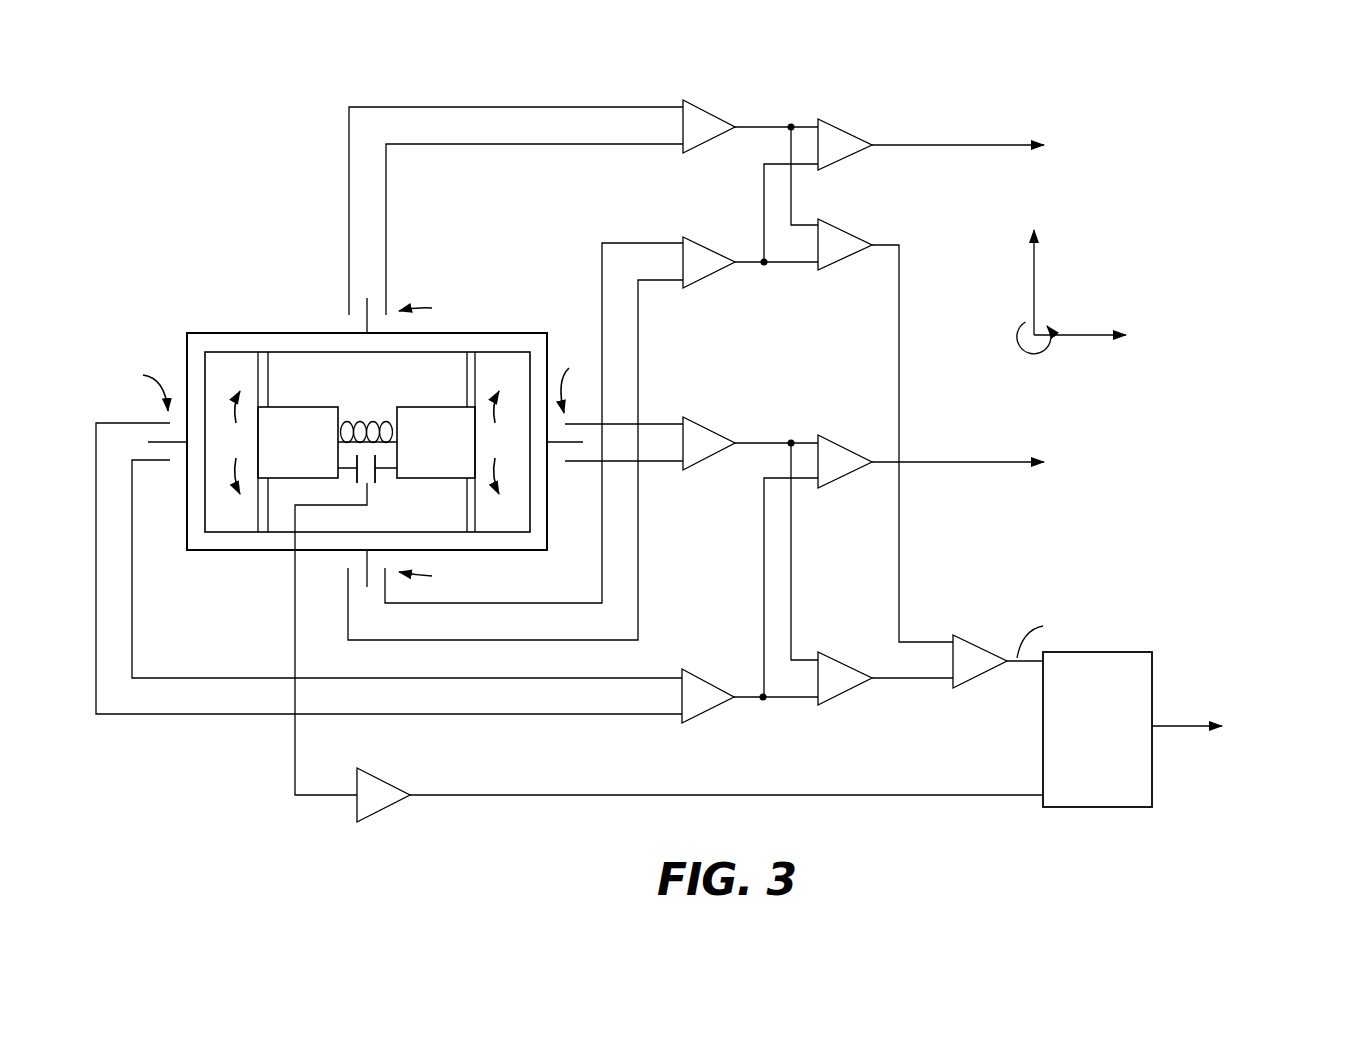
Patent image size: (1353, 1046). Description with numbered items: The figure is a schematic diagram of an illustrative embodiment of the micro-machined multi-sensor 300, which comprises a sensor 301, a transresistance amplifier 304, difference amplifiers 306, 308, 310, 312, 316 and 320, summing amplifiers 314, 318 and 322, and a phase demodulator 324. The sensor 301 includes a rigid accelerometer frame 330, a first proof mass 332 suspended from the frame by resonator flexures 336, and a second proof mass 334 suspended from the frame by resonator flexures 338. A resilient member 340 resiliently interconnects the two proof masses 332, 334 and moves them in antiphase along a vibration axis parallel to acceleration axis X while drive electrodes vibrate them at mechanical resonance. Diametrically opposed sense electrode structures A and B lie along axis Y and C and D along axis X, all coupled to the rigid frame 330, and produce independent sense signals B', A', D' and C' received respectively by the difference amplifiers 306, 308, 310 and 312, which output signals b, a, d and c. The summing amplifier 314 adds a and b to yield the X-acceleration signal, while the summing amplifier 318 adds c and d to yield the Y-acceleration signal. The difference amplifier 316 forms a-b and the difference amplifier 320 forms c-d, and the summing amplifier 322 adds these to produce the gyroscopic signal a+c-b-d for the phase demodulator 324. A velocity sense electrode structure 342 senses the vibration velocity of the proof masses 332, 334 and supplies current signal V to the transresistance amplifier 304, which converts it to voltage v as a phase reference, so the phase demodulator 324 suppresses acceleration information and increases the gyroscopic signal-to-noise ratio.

The multi-sensor 300 is at (230, 122).
The sensor 301 is at (505, 296).
The transresistance amplifier 304 is at (383, 778).
The difference amplifier 306 is at (714, 109).
The difference amplifier 308 is at (712, 240).
The difference amplifier 310 is at (705, 419).
The difference amplifier 312 is at (706, 670).
The summing amplifier 314 is at (848, 130).
The difference amplifier 316 is at (848, 229).
The summing amplifier 318 is at (845, 436).
The difference amplifier 320 is at (845, 653).
The summing amplifier 322 is at (980, 640).
The phase demodulator 324 is at (1097, 729).
The rigid accelerometer frame 330 is at (258, 332).
The first proof mass 332 is at (298, 442).
The second proof mass 334 is at (436, 442).
The resonator flexures 336 is at (240, 442).
The resonator flexures 338 is at (496, 442).
The resilient member 340 is at (369, 412).
The velocity sense electrode structure 342 is at (379, 490).